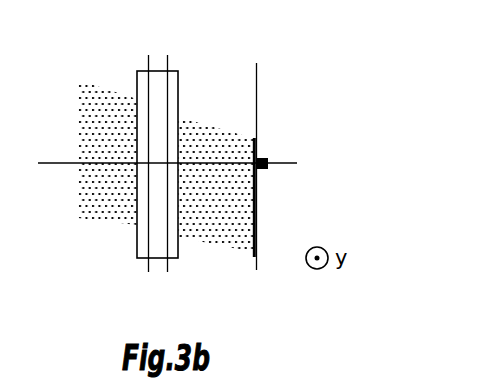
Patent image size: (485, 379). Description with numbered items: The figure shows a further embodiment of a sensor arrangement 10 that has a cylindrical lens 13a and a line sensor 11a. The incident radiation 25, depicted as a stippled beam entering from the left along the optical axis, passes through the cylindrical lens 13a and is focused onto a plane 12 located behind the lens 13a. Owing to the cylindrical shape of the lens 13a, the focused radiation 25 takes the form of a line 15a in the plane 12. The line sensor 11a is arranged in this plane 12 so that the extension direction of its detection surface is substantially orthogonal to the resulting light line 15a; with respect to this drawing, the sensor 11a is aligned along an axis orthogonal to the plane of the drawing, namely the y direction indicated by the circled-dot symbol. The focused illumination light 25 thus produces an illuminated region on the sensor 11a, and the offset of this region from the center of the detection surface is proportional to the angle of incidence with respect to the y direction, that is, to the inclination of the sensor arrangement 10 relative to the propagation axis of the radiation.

The sensor arrangement 10 is at (232, 42).
The line sensor 11a is at (302, 146).
The plane 12 is at (294, 166).
The cylindrical lens 13a is at (115, 157).
The line 15a is at (210, 219).
The incident radiation 25 is at (137, 166).